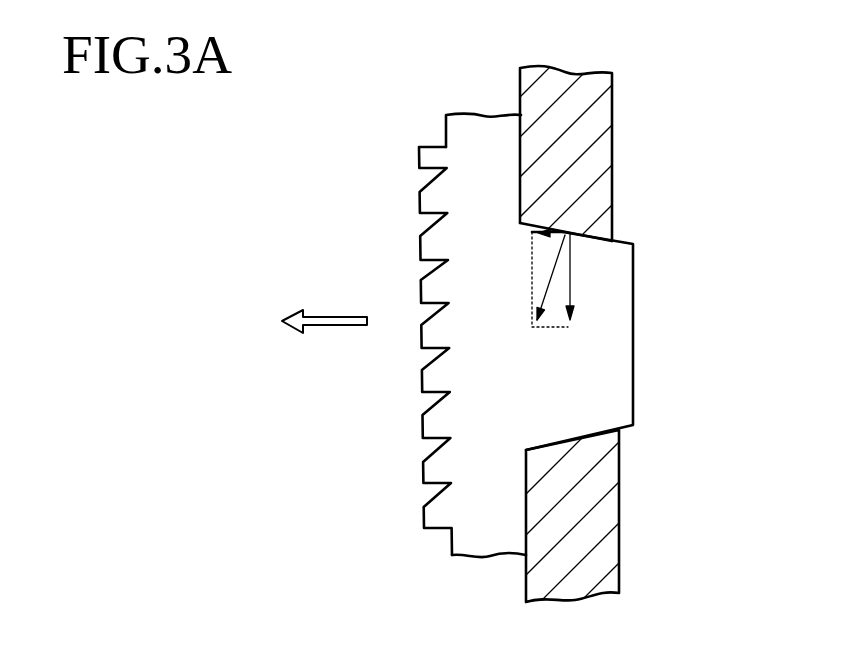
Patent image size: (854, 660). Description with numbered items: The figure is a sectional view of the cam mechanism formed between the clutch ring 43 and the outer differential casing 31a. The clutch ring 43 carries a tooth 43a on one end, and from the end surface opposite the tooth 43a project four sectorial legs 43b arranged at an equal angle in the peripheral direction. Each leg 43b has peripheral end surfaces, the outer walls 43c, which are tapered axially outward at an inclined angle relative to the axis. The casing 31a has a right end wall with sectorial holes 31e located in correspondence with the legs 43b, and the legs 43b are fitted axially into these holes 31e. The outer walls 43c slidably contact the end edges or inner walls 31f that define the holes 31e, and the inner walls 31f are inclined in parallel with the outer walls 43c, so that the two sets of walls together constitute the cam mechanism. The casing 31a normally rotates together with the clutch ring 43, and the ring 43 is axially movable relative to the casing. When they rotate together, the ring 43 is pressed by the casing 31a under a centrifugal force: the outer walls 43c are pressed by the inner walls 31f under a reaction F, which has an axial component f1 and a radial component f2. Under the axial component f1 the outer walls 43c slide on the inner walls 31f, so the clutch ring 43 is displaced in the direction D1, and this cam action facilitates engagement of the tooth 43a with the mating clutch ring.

The clutch ring 43 is at (568, 346).
The tooth 43a is at (433, 157).
The sectorial legs 43b is at (617, 350).
The outer walls 43c is at (532, 232).
The casing 31a is at (573, 68).
The sectorial holes 31e is at (568, 437).
The inner walls 31f is at (593, 236).
The reaction F is at (550, 279).
The axial component f1 is at (557, 230).
The radial component f2 is at (581, 277).
The direction D1 is at (324, 308).